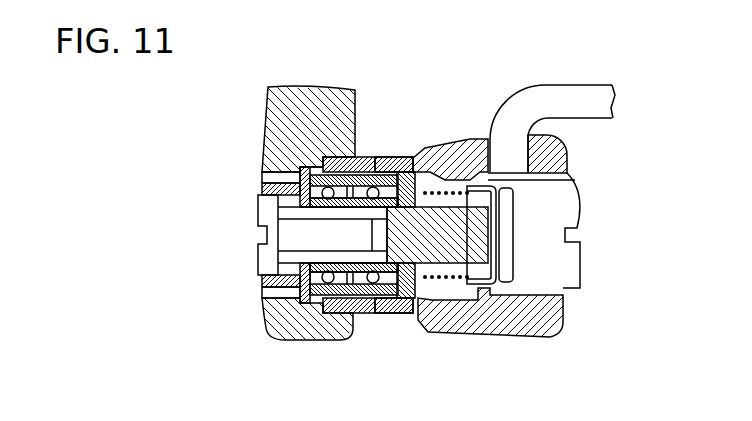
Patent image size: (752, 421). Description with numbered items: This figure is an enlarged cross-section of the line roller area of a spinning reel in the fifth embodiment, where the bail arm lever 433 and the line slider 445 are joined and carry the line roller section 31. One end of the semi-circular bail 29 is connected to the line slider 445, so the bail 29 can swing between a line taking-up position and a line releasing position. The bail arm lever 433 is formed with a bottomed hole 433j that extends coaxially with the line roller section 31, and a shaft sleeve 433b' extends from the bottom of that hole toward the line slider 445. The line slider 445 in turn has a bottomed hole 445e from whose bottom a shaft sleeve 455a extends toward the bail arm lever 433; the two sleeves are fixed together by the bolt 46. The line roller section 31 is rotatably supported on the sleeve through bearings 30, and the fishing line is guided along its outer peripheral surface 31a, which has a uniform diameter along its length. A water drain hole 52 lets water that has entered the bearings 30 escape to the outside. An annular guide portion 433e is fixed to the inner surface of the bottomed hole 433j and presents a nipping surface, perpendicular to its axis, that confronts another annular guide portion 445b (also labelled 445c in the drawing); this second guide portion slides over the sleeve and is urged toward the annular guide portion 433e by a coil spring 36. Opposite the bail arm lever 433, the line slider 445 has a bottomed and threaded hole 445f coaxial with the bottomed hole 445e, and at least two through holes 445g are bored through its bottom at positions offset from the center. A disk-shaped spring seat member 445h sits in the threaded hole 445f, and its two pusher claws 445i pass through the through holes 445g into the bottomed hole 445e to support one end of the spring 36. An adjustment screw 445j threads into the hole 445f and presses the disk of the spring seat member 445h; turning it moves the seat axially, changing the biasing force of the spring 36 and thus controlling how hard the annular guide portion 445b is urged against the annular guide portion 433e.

The bail 29 is at (589, 93).
The bearing 30 is at (322, 306).
The line roller section 31 is at (393, 296).
The outer peripheral surface of line roller section 31a is at (328, 285).
The coil spring 36 is at (457, 296).
The bolt 46 is at (258, 218).
The water drain hole 52 is at (262, 183).
The bail arm lever 433 is at (270, 113).
The shaft sleeve 433b' is at (234, 242).
The annular guide portion 433e is at (363, 157).
The bottomed hole 433j is at (262, 175).
The line slider 445 is at (557, 315).
The annular guide portion 445b is at (408, 157).
The cover retaining plate (lower) 445c is at (407, 157).
The bottomed hole 445e is at (458, 143).
The bottomed and threaded hole 445f is at (560, 182).
The through holes 445g is at (482, 184).
The spring seat member 445h is at (515, 250).
The pusher claws 445i is at (533, 135).
The adjustment screw 445j is at (548, 214).
The bearing housing wall 455a is at (364, 314).